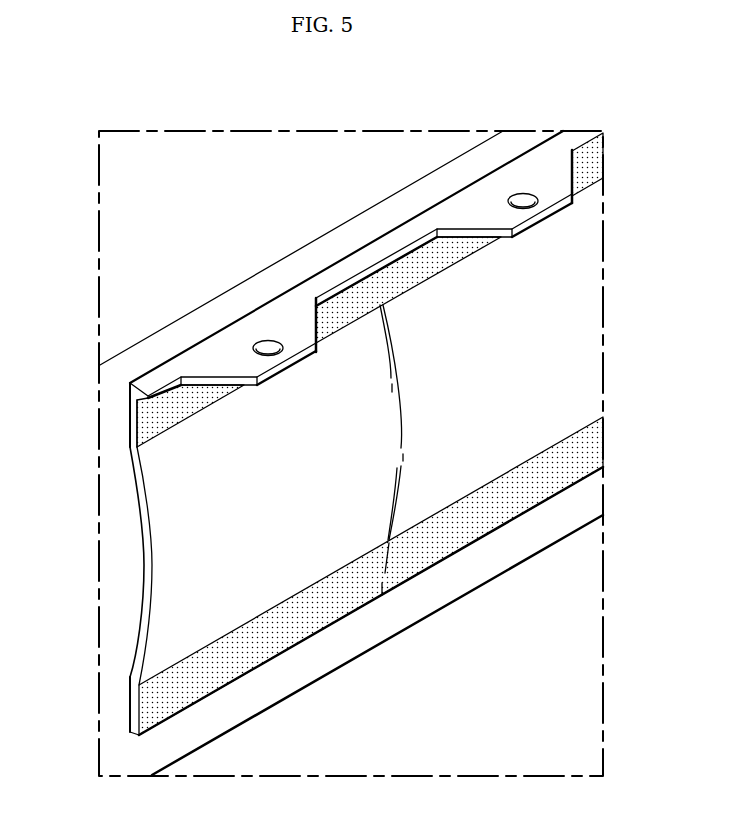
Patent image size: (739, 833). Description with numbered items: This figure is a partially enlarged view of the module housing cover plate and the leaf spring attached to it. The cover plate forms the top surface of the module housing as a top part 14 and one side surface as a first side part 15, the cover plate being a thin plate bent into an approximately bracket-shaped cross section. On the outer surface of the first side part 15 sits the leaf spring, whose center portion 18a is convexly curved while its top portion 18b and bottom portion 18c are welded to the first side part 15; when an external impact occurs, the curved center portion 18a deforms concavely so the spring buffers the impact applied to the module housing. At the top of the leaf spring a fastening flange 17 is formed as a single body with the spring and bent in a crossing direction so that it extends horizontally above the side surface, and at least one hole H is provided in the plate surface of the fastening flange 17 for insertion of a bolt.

The top part 14 is at (122, 254).
The first side part 15 is at (113, 611).
The fastening flange 17 is at (215, 356).
The hole H is at (523, 201).
The center portion 18a is at (173, 542).
The top portion 18b is at (148, 422).
The bottom portion 18c is at (148, 707).